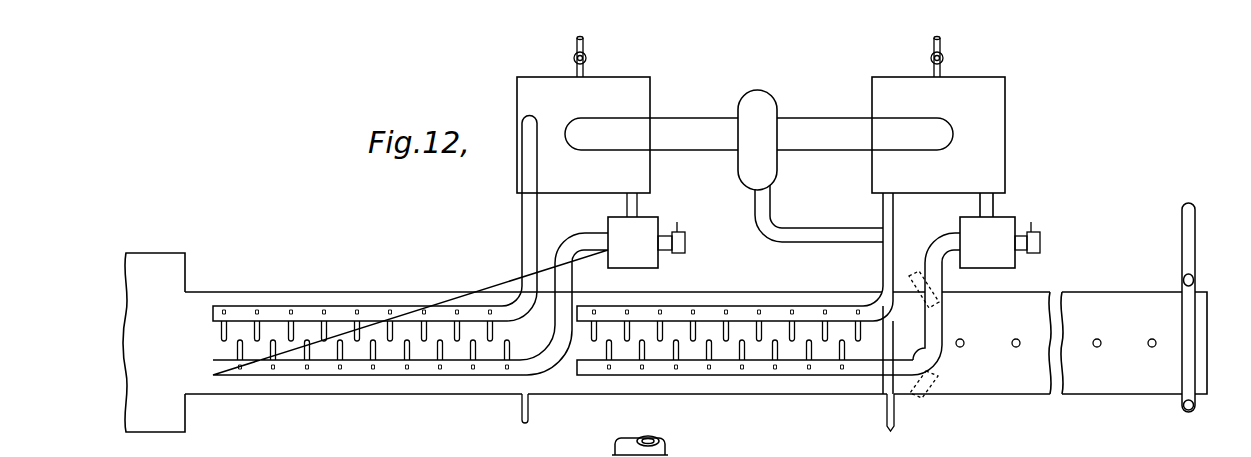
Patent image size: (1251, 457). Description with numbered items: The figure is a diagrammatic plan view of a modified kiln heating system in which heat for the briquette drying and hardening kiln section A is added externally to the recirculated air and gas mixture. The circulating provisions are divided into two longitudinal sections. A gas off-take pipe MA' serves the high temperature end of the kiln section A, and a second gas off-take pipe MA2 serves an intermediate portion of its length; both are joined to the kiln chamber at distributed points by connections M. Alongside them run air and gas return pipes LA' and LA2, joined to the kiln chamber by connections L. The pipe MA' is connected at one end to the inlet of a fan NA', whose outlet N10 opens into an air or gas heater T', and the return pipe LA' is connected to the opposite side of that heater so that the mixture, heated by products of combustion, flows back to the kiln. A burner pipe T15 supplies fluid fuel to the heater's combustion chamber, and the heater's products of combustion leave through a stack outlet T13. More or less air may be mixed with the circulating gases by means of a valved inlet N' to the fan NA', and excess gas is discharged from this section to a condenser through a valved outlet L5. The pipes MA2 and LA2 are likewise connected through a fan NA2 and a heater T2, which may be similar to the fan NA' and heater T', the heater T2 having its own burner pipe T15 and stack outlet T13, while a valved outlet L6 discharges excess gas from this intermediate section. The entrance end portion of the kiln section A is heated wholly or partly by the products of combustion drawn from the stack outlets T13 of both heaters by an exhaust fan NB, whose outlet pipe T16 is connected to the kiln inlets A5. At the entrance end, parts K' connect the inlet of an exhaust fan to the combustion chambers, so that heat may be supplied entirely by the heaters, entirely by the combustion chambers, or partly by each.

The burner pipe T15 is at (588, 44).
The air or gas heater T' is at (549, 121).
The heater stack outlet T13 is at (696, 110).
The exhaust fan NB is at (767, 97).
The heater T2 is at (1008, 103).
The fan outlet N10 is at (635, 203).
The fan NA' is at (633, 242).
The valved inlet N' is at (871, 245).
The fan NA2 is at (987, 230).
The outlet pipe T16 is at (818, 228).
The connections L is at (291, 330).
The air and gas return pipe LA' is at (375, 218).
The air and gas return pipe LA2 is at (781, 311).
The connections M is at (305, 347).
The gas off-take pipe MA' is at (410, 328).
The gas off-take pipe MA2 is at (777, 378).
The kiln section A is at (463, 393).
The valve outlet L5 is at (525, 417).
The valved outlet L6 is at (886, 418).
The kiln inlets A5 is at (941, 304).
The parts K' is at (1170, 307).